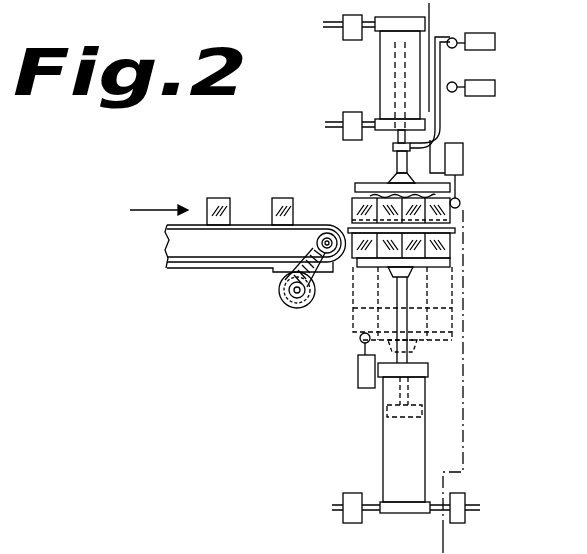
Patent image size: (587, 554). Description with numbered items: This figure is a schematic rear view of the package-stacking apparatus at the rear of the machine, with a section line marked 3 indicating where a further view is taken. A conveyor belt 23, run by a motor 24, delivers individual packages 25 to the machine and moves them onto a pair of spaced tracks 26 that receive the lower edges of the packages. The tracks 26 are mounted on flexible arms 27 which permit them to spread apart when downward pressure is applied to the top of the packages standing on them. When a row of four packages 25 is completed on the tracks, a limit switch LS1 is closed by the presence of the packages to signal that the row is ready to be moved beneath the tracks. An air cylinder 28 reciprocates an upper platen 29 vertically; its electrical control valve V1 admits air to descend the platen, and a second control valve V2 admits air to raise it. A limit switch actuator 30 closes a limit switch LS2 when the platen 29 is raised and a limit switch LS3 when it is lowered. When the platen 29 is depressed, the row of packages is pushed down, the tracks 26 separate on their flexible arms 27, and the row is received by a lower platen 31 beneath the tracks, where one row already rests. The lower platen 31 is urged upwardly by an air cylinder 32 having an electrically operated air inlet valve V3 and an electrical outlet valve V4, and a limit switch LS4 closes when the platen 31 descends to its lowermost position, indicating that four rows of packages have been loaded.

The section line 3- 3 is at (438, 23).
The conveyor belt 23 is at (190, 253).
The motor 24 is at (282, 298).
The packages 25 is at (285, 197).
The tracks 26 is at (352, 215).
The flexible arms 27 is at (355, 190).
The air cylinder 28 is at (380, 66).
The upper platen 29 is at (380, 184).
The limit switch actuator 30 is at (442, 116).
The lower platen 31 is at (452, 265).
The air cylinder 32 is at (383, 430).
The electrical control valve V1 is at (343, 35).
The control valve V2 is at (343, 116).
The air inlet valve V3 is at (468, 496).
The outlet valve V4 is at (352, 493).
The limit switch LS1 is at (466, 155).
The limit switch LS2 is at (498, 38).
The limit switch LS3 is at (498, 88).
The limit switch LS4 is at (356, 373).